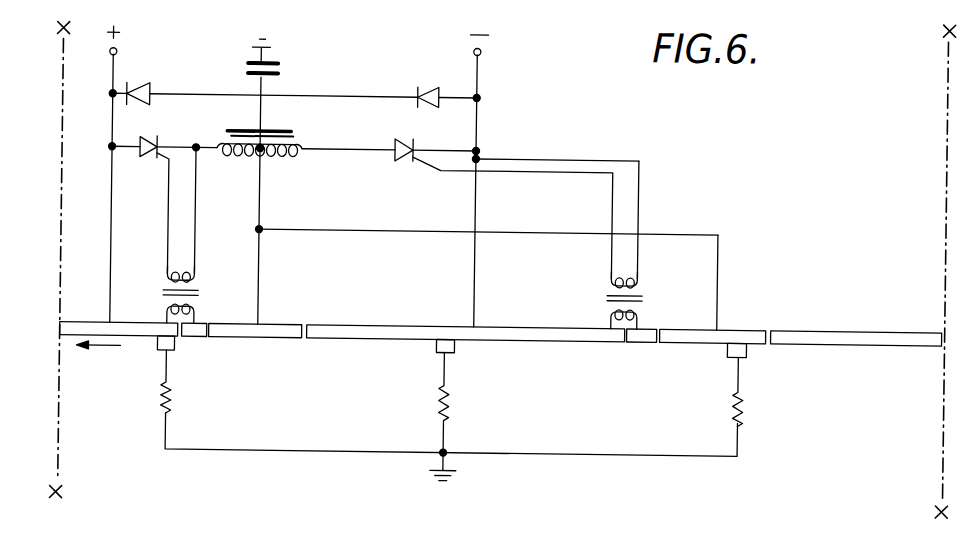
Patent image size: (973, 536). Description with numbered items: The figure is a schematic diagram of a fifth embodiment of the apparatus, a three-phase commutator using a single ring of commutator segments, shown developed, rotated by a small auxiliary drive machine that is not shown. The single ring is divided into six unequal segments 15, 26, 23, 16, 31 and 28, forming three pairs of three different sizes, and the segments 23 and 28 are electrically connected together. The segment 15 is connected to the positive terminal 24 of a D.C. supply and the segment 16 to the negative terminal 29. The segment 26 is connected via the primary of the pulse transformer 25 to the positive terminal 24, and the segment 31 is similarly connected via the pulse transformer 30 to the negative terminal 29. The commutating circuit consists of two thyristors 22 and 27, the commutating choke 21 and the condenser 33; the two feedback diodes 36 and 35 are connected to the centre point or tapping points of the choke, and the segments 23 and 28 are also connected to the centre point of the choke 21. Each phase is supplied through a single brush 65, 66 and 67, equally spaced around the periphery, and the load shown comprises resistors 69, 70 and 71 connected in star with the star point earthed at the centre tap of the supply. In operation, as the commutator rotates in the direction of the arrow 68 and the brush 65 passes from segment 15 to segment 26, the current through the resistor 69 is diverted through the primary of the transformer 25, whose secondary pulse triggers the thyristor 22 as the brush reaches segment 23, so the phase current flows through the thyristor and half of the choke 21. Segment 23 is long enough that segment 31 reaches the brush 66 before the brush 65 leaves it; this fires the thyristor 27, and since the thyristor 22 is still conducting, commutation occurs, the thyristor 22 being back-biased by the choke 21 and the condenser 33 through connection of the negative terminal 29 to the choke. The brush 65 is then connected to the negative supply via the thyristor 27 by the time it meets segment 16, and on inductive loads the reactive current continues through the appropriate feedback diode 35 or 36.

The commutator segment 15 is at (149, 341).
The commutator segment 16 is at (553, 327).
The commutating choke 21 is at (268, 134).
The thyristor 22 is at (152, 162).
The commutator segment 23 is at (293, 327).
The positive terminal 24 is at (115, 56).
The pulse transformer 25 is at (161, 314).
The commutator segment 26 is at (205, 327).
The thyristor 27 is at (397, 164).
The commutator segment 28 is at (752, 327).
The negative terminal 29 is at (479, 52).
The pulse transformer 30 is at (688, 305).
The commutator segment 31 is at (645, 341).
The condenser 33 is at (268, 66).
The feedback diode 35 is at (437, 88).
The feedback diode 36 is at (149, 88).
The output brush 65 is at (176, 354).
The output brush 66 is at (438, 345).
The output brush 67 is at (729, 352).
The arrow 68 is at (109, 351).
The load resistor 69 is at (162, 406).
The load resistor 70 is at (441, 406).
The load resistor 71 is at (735, 421).